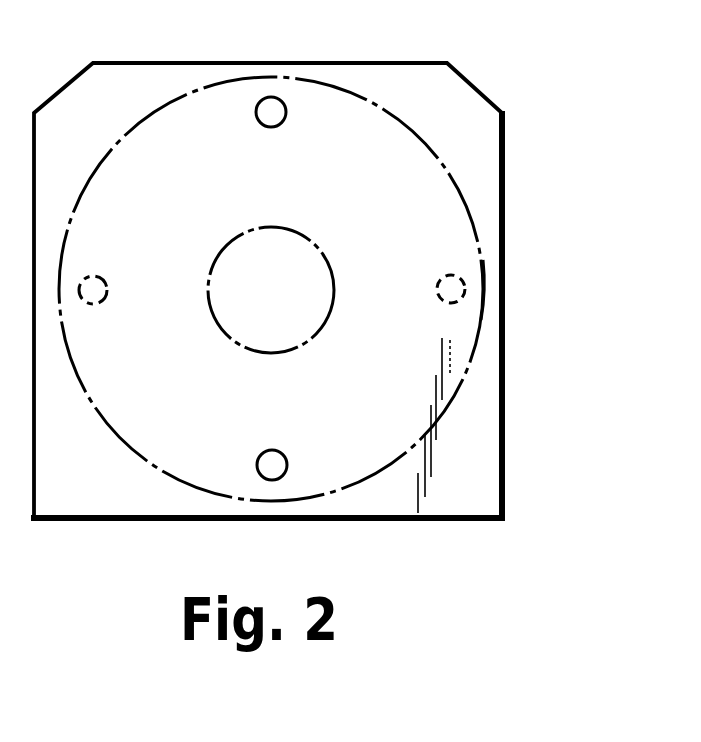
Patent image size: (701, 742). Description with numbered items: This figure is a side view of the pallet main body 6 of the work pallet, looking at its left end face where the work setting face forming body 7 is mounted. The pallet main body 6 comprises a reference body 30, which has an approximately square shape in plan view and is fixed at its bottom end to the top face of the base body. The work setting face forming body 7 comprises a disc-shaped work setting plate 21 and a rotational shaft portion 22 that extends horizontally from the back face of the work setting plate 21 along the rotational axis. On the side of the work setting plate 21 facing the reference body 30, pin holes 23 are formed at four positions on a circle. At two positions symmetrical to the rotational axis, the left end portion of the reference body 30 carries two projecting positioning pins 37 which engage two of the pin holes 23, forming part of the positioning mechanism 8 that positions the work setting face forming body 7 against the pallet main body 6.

The pallet main body 6 is at (478, 87).
The reference body 30 is at (507, 167).
The positioning mechanism 8 is at (488, 268).
The work setting plate 21 is at (85, 390).
The rotational shaft portion 22 is at (302, 350).
The pin holes 23 is at (102, 282).
The positioning pins 37 is at (271, 108).
The work setting face forming body 7 is at (458, 388).